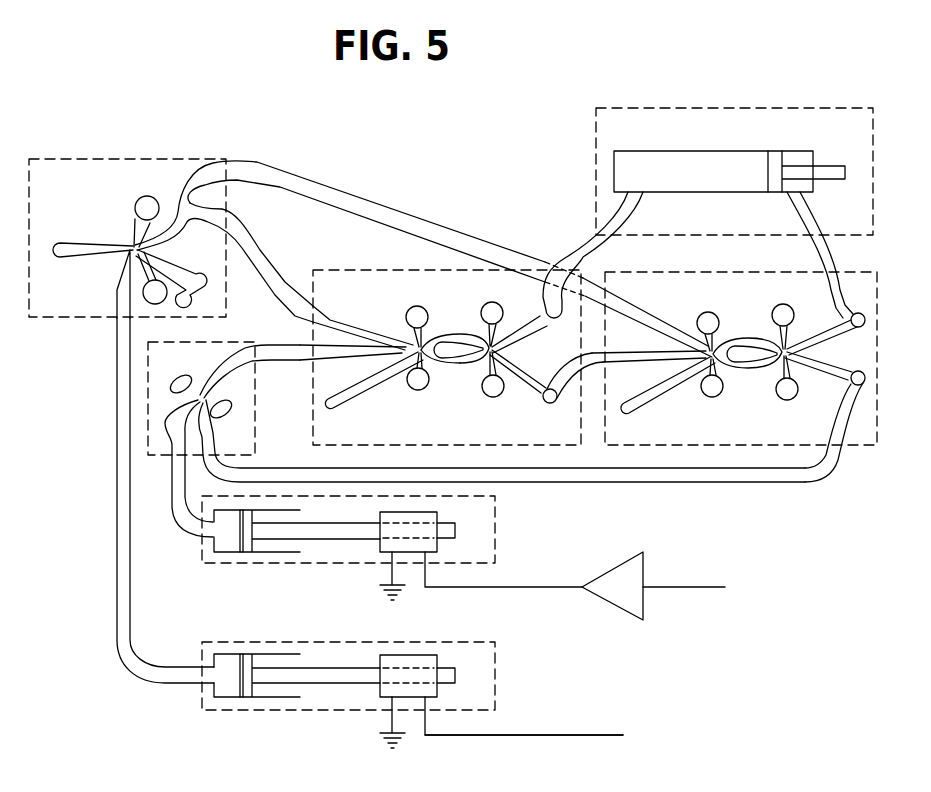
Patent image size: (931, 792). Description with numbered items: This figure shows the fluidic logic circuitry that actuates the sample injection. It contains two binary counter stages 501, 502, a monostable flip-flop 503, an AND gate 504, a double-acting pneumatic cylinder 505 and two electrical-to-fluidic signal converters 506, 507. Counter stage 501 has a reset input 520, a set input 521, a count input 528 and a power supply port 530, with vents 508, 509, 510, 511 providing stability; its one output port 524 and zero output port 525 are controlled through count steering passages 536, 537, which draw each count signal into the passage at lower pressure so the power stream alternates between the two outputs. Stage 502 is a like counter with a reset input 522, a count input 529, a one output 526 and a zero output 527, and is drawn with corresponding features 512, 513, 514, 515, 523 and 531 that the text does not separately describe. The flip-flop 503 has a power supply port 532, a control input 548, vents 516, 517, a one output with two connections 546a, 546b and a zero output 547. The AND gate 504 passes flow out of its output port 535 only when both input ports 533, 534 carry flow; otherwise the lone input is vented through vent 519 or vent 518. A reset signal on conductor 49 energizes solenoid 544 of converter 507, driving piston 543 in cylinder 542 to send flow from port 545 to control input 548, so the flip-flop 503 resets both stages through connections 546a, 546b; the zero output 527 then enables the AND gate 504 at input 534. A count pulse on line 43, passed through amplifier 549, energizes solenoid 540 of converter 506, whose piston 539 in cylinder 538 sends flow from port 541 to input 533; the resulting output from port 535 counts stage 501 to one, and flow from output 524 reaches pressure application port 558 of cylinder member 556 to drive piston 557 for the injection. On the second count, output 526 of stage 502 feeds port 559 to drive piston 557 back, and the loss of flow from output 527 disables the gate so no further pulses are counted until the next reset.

The binary counter stage 501 is at (439, 436).
The binary counter stage 502 is at (749, 436).
The monostable flip-flop 503 is at (73, 192).
The AND gate 504 is at (181, 366).
The double-acting pneumatic cylinder 505 is at (632, 132).
The electrofluidic transducer 506 is at (490, 557).
The electrofluidic transducer 507 is at (490, 702).
The vent 508 is at (408, 310).
The vent 509 is at (407, 386).
The vent 510 is at (500, 308).
The vent 511 is at (502, 392).
The vent 512 is at (702, 312).
The vent 513 is at (722, 393).
The vent 514 is at (790, 307).
The vent 515 is at (790, 402).
The vent 516 is at (137, 198).
The vent 517 is at (155, 305).
The vent 518 is at (186, 380).
The vent 519 is at (232, 402).
The reset input 520 is at (357, 312).
The set input 521 is at (348, 410).
The reset input 522 is at (660, 318).
The output passage 523 is at (655, 408).
The one output port 524 is at (536, 332).
The zero output port 525 is at (530, 368).
The one output port 526 is at (862, 330).
The zero output port 527 is at (863, 372).
The count input port 528 is at (350, 346).
The count input 529 is at (644, 352).
The power supply port 530 is at (450, 360).
The interaction chamber 531 is at (763, 330).
The power supply port 532 is at (80, 242).
The input port 533 is at (168, 447).
The input port 534 is at (212, 437).
The output port 535 is at (235, 348).
The count steering passage 536 is at (466, 323).
The count steering passage 537 is at (440, 368).
The pneumatic cylinder 538 is at (228, 555).
The piston 539 is at (258, 552).
The piston drive solenoid 540 is at (420, 512).
The output port 541 is at (172, 518).
The pneumatic cylinder 542 is at (228, 652).
The piston 543 is at (254, 655).
The piston drive solenoid 544 is at (420, 655).
The output port 545 is at (117, 600).
The one output port connection 546a is at (198, 170).
The one output port connection 546b is at (218, 206).
The zero output port 547 is at (210, 272).
The control input 548 is at (117, 292).
The amplifier 549 is at (612, 570).
The cylinder member 556 is at (720, 150).
The piston 557 is at (780, 160).
The pressure application port 558 is at (645, 212).
The pressure application port 559 is at (792, 215).
The line 43 is at (690, 588).
The conductor 49 is at (600, 735).